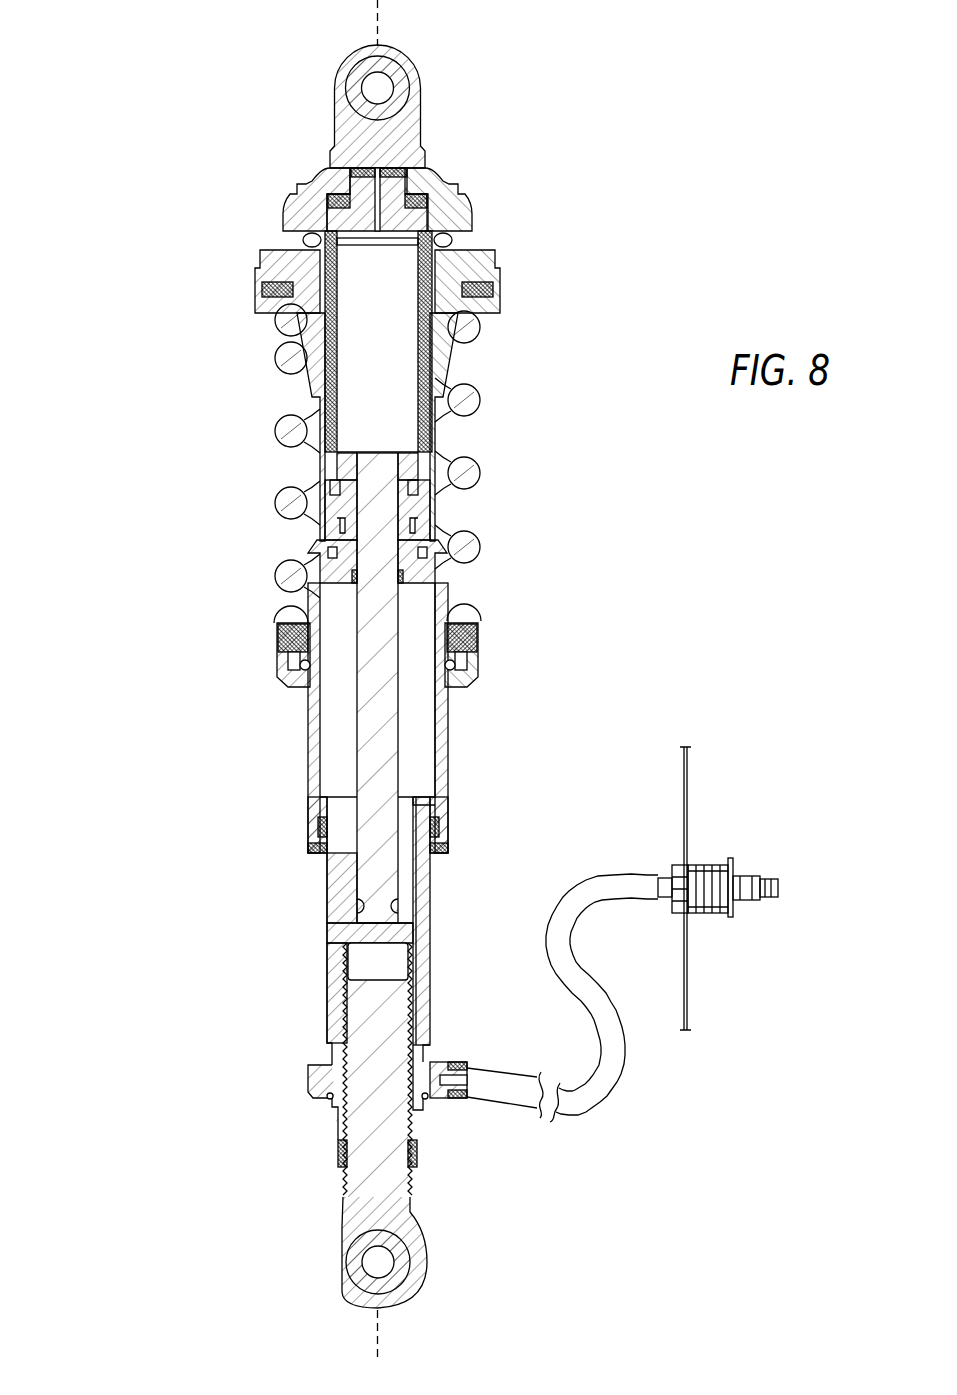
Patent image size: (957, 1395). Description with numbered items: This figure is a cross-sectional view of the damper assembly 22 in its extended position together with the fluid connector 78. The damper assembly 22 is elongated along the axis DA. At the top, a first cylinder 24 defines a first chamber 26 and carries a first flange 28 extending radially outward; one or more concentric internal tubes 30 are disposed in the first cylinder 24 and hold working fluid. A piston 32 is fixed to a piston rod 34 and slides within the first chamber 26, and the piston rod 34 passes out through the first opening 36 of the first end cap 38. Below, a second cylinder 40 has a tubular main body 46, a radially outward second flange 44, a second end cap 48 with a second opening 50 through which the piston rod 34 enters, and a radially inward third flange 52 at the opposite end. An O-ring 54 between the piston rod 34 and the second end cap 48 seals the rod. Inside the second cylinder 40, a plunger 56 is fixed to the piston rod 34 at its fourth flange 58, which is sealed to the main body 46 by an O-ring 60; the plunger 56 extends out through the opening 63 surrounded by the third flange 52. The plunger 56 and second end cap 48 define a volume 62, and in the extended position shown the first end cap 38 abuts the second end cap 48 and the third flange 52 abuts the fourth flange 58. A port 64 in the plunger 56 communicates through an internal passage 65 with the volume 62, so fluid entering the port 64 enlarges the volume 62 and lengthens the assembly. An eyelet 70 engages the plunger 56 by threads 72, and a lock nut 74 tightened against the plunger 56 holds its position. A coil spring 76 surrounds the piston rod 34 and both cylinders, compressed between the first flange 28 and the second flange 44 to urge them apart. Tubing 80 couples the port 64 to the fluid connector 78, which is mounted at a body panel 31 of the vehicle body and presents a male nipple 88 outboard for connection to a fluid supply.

The damper assembly 22 is at (138, 145).
The axis DA is at (378, 30).
The first cylinder 24 is at (437, 505).
The first chamber 26 is at (400, 366).
The first flange 28 is at (500, 300).
The internal tubes 30 is at (425, 442).
The body panel 31 is at (690, 785).
The piston 32 is at (345, 463).
The piston rod 34 is at (370, 736).
The first opening 36 is at (390, 540).
The first end cap 38 is at (338, 508).
The second cylinder 40 is at (308, 745).
The second flange 44 is at (280, 662).
The main body 46 is at (450, 777).
The second end cap 48 is at (423, 568).
The second opening 50 is at (340, 539).
The third flange 52 is at (440, 814).
The O-ring 54 is at (347, 575).
The plunger 56 is at (335, 968).
The fourth flange 58 is at (427, 797).
The O-ring 60 is at (312, 800).
The volume 62 is at (416, 717).
The opening 63 is at (330, 840).
The port 64 is at (458, 1100).
The internal passage 65 is at (420, 888).
The eyelet 70 is at (420, 1258).
The threads 72 is at (350, 1090).
The lock nut 74 is at (410, 1172).
The coil spring 76 is at (475, 483).
The fluid connector 78 is at (718, 915).
The tubing 80 is at (602, 1100).
The male nipple 88 is at (768, 878).